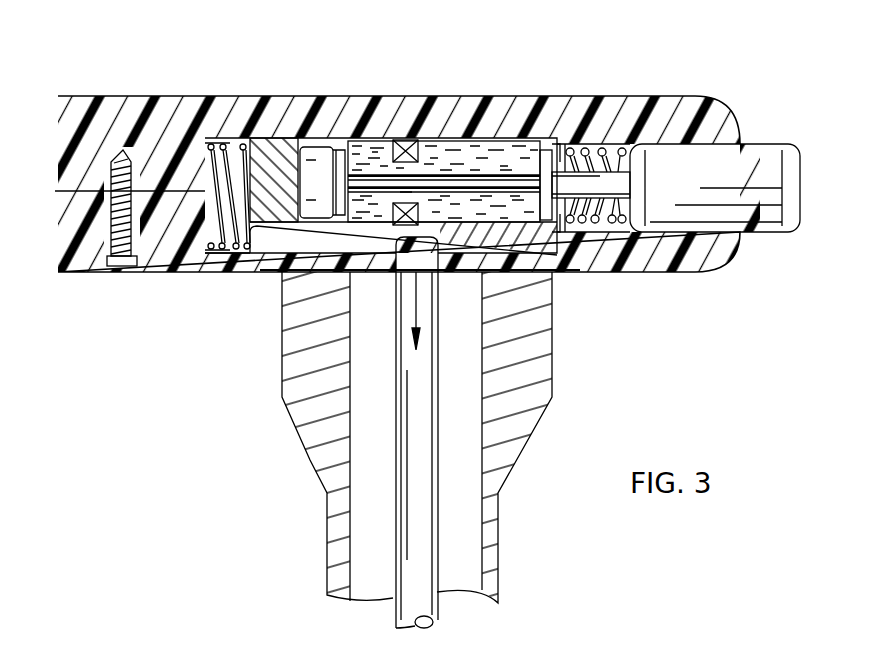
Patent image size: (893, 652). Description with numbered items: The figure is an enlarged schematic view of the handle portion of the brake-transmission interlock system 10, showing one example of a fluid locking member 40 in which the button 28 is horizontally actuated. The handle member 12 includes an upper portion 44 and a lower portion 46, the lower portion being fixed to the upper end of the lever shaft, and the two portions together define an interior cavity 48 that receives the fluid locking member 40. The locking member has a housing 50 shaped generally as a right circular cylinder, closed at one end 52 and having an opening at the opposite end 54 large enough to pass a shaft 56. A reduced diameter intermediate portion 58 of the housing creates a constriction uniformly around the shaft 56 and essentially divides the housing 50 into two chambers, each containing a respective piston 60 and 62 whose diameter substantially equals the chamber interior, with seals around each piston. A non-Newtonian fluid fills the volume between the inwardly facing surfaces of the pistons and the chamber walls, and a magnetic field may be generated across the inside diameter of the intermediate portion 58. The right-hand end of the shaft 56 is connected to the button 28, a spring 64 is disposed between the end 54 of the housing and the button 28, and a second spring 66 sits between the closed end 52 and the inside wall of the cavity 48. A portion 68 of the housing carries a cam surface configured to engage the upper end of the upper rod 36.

The door closer assembly 10 is at (150, 382).
The handle member 12 is at (662, 86).
The button 28 is at (797, 143).
The upper rod 36 is at (423, 537).
The fluid locking member 40 is at (513, 118).
The upper portion 44 is at (113, 93).
The lower portion 46 is at (157, 270).
The interior cavity 48 is at (281, 100).
The housing 50 is at (373, 143).
The closed end 52 is at (232, 258).
The opposite end 54 is at (582, 148).
The shaft 56 is at (624, 150).
The reduced diameter intermediate portion 58 is at (418, 158).
The piston 60 is at (337, 148).
The piston 62 is at (541, 145).
The spring 64 is at (598, 273).
The second spring 66 is at (213, 100).
The cam surface portion 68 is at (327, 232).